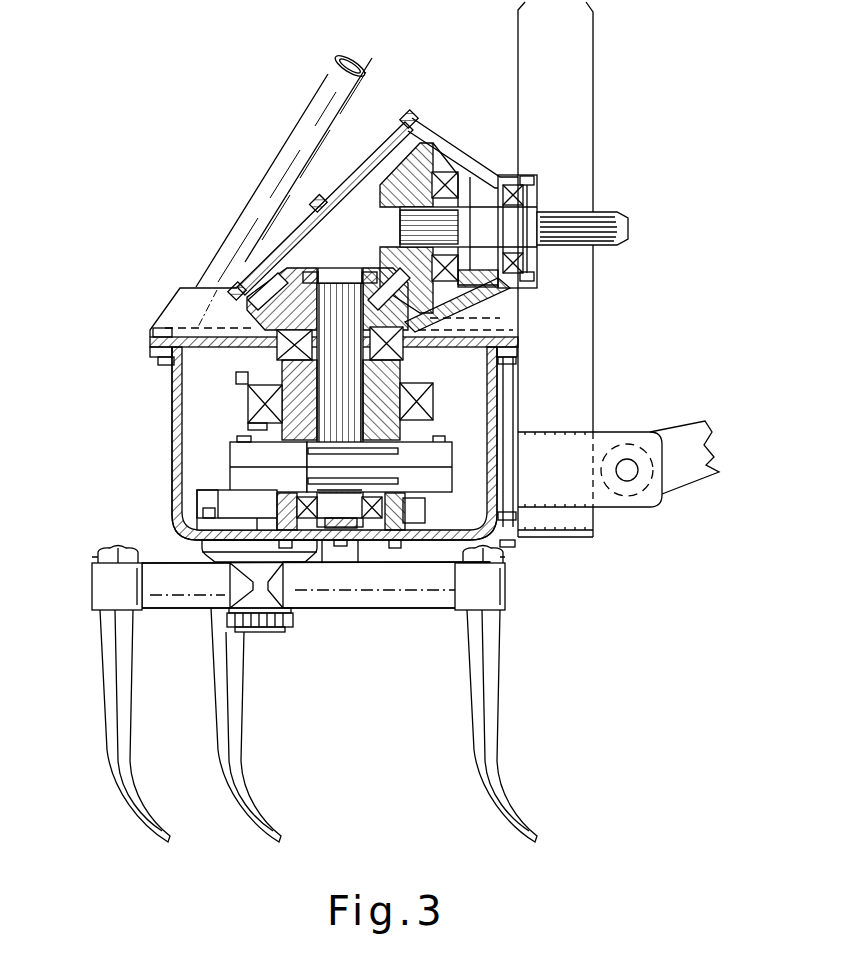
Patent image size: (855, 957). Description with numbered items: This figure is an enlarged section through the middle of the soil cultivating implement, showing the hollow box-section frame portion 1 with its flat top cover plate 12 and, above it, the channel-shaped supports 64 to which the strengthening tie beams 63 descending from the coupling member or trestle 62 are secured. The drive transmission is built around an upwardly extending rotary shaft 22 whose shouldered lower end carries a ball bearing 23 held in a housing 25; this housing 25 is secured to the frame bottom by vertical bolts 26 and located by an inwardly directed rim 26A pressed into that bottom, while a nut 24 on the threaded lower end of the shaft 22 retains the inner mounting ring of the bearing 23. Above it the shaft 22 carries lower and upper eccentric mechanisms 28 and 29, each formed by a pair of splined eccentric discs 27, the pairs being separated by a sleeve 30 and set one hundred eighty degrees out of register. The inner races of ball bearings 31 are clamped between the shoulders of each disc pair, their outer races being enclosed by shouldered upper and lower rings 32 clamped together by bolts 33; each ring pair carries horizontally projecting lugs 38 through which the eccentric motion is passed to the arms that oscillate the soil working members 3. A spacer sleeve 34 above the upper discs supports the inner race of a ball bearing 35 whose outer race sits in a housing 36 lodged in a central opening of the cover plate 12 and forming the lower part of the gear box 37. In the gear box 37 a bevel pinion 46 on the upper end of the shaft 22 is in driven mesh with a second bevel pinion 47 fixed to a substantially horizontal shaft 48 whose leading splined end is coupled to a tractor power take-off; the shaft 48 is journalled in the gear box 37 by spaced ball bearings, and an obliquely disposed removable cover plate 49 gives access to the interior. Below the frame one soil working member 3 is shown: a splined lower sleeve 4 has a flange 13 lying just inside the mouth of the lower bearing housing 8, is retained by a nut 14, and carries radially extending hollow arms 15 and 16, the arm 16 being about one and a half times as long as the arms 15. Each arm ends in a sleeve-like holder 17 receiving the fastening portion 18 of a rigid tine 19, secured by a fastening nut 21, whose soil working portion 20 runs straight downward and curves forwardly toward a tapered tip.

The hollow box-section frame portion 1 is at (168, 387).
The soil working member 3 is at (352, 754).
The lower sleeve 4 is at (252, 588).
The lower bearing housing 8 is at (200, 493).
The top cover plate 12 is at (238, 335).
The flange 13 is at (215, 560).
The nut 14 is at (300, 630).
The shorter arms 15 is at (178, 602).
The longer arm 16 is at (395, 592).
The sleeve-like holder 17 is at (100, 590).
The fastening portion 18 is at (122, 552).
The soil working tine 19 is at (133, 722).
The soil working portion 20 is at (217, 672).
The fastening nut 21 is at (100, 552).
The rotary shaft 22 is at (340, 252).
The ball bearing 23 is at (295, 502).
The nut 24 is at (347, 523).
The housing 25 is at (408, 508).
The bolts 26 is at (393, 545).
The inwardly directed rim 26A is at (398, 545).
The eccentric discs 27 is at (273, 428).
The lower eccentric mechanism 28 is at (225, 468).
The upper eccentric mechanism 29 is at (223, 415).
The sleeve 30 is at (300, 447).
The ball bearings 31 is at (250, 397).
The upper and lower rings 32 is at (445, 405).
The bolts 33 is at (233, 377).
The spacer sleeve 34 is at (350, 380).
The ball bearing 35 is at (273, 355).
The housing 36 is at (420, 352).
The gear box 37 is at (445, 147).
The lugs 38 is at (375, 480).
The bevel pinion 46 is at (282, 277).
The second bevel pinion 47 is at (383, 188).
The horizontal shaft 48 is at (633, 197).
The removable cover plate 49 is at (358, 173).
The coupling member or trestle 62 is at (527, 22).
The strengthening tie beams 63 is at (312, 95).
The supports 64 is at (180, 307).